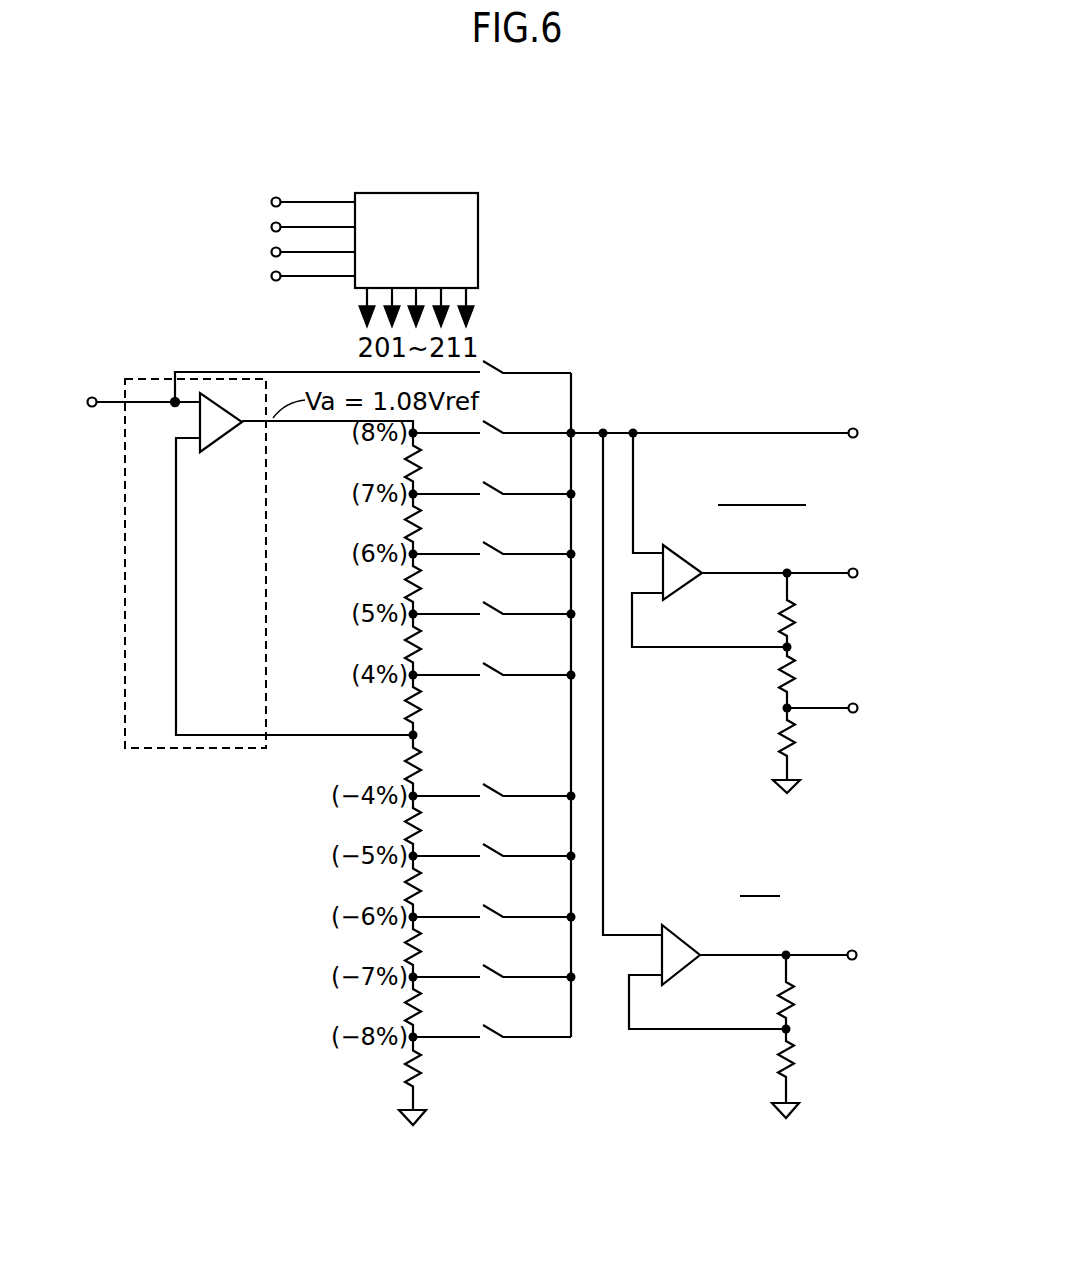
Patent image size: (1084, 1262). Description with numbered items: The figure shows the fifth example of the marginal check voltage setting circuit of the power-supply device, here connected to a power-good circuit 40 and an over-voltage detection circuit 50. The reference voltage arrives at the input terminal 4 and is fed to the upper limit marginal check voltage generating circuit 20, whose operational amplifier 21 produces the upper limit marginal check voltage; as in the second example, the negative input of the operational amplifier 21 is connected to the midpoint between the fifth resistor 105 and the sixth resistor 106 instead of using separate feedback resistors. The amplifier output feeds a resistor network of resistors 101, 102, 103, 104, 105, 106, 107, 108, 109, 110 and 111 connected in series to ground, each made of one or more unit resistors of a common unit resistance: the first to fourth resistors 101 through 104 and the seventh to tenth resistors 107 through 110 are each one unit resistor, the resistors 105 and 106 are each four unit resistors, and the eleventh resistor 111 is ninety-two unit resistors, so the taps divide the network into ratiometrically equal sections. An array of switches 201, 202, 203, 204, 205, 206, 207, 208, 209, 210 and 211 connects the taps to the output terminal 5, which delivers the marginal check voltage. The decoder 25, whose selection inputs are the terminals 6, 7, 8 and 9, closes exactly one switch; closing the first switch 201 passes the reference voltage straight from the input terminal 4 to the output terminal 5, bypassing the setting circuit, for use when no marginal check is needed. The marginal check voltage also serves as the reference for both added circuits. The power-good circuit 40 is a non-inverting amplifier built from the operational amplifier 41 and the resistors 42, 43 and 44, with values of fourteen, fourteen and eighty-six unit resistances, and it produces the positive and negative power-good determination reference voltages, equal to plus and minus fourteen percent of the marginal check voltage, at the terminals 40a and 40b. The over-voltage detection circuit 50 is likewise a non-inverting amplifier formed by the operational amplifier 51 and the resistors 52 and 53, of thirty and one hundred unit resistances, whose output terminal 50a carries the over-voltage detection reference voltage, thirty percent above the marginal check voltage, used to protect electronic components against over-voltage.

The input terminal 4 is at (92, 407).
The output terminal 5 is at (858, 433).
The decoder input terminal 6 is at (271, 202).
The decoder input terminal 7 is at (271, 227).
The decoder input terminal 8 is at (271, 252).
The decoder input terminal 9 is at (271, 276).
The upper limit marginal check voltage generating circuit 20 is at (302, 531).
The operational amplifier 21 is at (200, 425).
The decoder 25 is at (415, 193).
The power-good circuit 40 is at (784, 627).
The +Vgd output terminal 40a is at (858, 573).
The -Vgd output terminal 40b is at (858, 708).
The operational amplifier 41 is at (690, 556).
The resistor 42 is at (796, 620).
The resistor 43 is at (796, 654).
The resistor 44 is at (796, 740).
The over-voltage detection circuit 50 is at (782, 979).
The Vov output terminal 50a is at (857, 955).
The operational amplifier 51 is at (683, 935).
The resistor 52 is at (796, 1000).
The resistor 53 is at (796, 1060).
The first resistor 101 is at (421, 464).
The second resistor 102 is at (421, 525).
The third resistor 103 is at (421, 585).
The fourth resistor 104 is at (421, 645).
The fifth resistor 105 is at (421, 706).
The sixth resistor 106 is at (421, 766).
The seventh resistor 107 is at (421, 827).
The eighth resistor 108 is at (421, 887).
The ninth resistor 109 is at (421, 948).
The tenth resistor 110 is at (421, 1008).
The eleventh resistor 111 is at (421, 1068).
The first switch 201 is at (495, 366).
The switch 202 is at (495, 426).
The switch 203 is at (495, 487).
The switch 204 is at (495, 547).
The switch 205 is at (495, 607).
The switch 206 is at (495, 668).
The switch 207 is at (495, 789).
The switch 208 is at (495, 849).
The switch 209 is at (495, 910).
The switch 210 is at (495, 970).
The switch 211 is at (495, 1030).